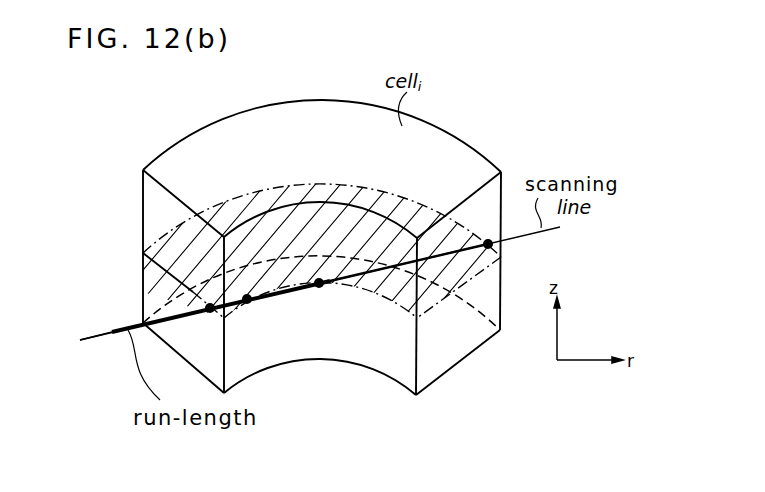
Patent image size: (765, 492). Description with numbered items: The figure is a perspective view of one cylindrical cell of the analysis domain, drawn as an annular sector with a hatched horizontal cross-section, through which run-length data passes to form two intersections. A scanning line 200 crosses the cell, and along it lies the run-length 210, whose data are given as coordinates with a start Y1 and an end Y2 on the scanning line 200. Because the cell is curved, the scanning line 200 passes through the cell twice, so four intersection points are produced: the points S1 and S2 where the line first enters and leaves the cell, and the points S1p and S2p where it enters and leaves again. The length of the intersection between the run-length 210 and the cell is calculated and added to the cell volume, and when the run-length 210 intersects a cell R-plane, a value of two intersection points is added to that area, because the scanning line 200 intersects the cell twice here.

The scanning line 200 is at (550, 230).
The run-length 210 is at (283, 296).
The intersection point S1 is at (205, 323).
The intersection point S2 is at (249, 315).
The intersection point S1' S1p is at (318, 299).
The intersection point S2' S2p is at (481, 226).
The run-length start coordinate Y1 is at (103, 346).
The run-length end coordinate Y2 is at (321, 288).